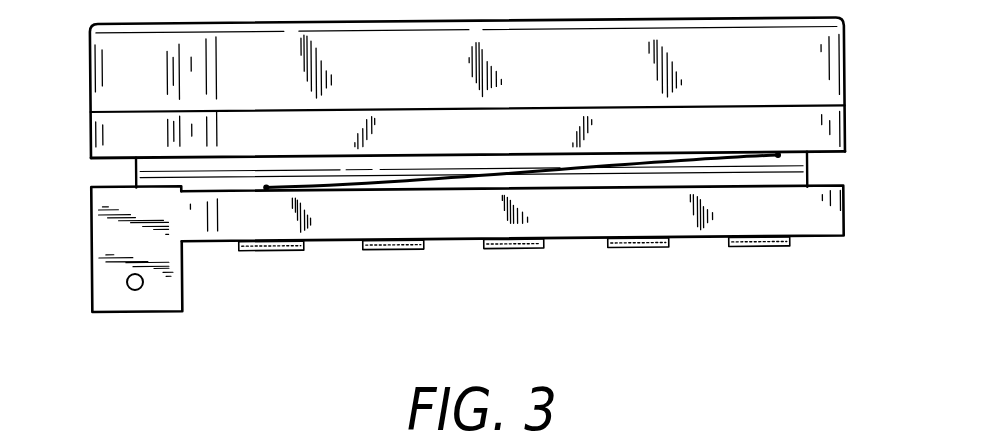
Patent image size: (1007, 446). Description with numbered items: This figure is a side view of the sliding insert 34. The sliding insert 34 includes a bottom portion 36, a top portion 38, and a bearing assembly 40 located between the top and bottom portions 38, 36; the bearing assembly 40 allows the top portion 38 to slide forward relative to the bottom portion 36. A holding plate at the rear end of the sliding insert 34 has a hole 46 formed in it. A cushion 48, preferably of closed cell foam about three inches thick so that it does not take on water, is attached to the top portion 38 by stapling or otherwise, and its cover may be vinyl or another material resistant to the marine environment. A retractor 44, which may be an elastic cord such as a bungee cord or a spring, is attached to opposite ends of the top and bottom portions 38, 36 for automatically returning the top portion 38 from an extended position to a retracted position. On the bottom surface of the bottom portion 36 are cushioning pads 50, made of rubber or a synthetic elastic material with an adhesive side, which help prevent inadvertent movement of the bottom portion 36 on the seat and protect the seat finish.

The sliding insert 34 is at (672, 307).
The bottom portion 36 is at (817, 224).
The top portion 38 is at (100, 132).
The bearing assembly 40 is at (805, 176).
The retractor 44 is at (170, 306).
The hole 46 is at (143, 281).
The cushion 48 is at (588, 78).
The cushioning pads 50 is at (546, 251).